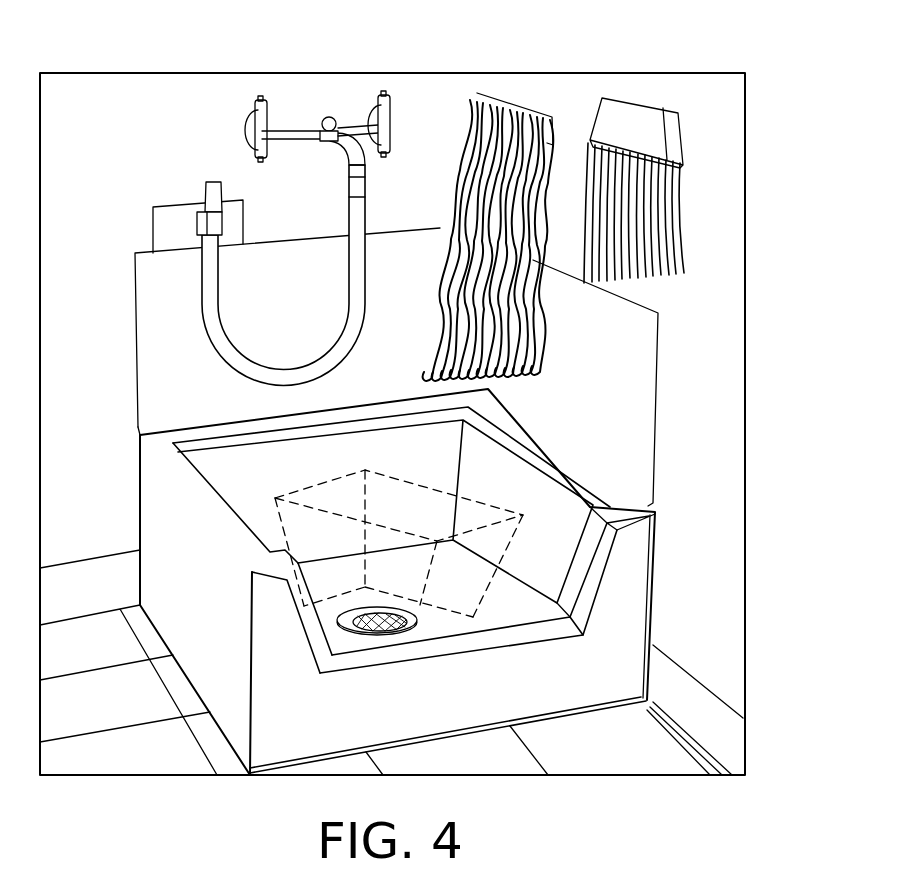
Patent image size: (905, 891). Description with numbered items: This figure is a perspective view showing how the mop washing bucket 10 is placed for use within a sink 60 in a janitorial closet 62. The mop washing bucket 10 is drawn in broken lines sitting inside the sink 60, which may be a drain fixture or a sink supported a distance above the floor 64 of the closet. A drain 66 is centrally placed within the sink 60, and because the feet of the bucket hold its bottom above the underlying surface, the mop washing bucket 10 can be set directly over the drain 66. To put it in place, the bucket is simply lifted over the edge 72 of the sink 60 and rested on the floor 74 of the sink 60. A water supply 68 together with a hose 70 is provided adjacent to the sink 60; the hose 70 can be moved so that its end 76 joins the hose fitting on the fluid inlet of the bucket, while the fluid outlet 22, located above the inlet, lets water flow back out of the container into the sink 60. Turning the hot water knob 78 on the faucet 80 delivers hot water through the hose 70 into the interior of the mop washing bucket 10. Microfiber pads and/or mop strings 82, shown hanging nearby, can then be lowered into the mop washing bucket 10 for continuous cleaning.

The mop washing bucket 10 is at (475, 507).
The fluid outlet 22 is at (357, 218).
The sink 60 is at (557, 530).
The janitorial closet 62 is at (712, 500).
The floor 64 is at (637, 753).
The drain 66 is at (378, 620).
The water supply 68 is at (357, 158).
The hose 70 is at (366, 302).
The edge 72 is at (543, 615).
The floor of the sink 74 is at (507, 597).
The end 76 is at (208, 180).
The hot water knob 78 is at (265, 102).
The faucet 80 is at (343, 128).
The mop strings 82 is at (533, 293).